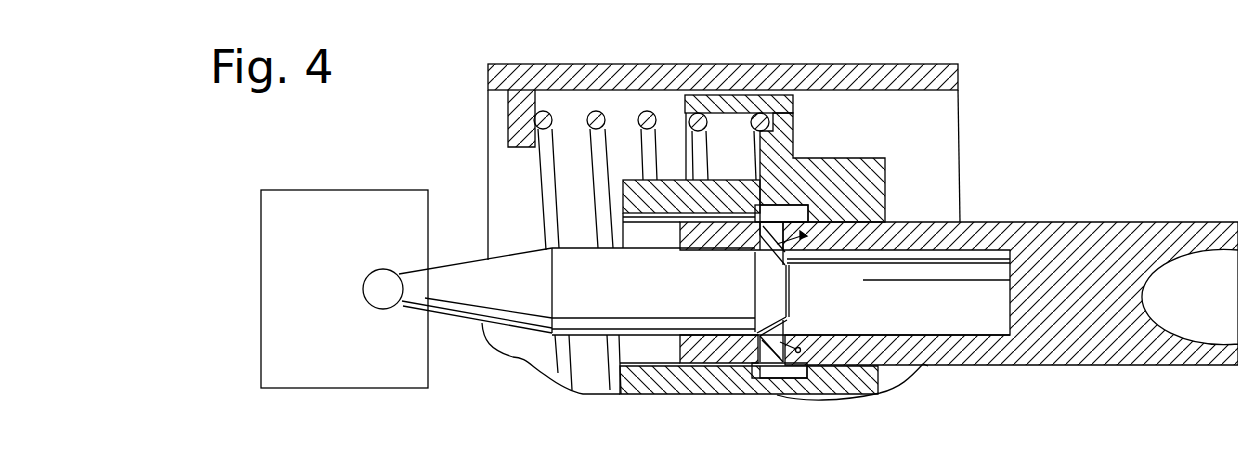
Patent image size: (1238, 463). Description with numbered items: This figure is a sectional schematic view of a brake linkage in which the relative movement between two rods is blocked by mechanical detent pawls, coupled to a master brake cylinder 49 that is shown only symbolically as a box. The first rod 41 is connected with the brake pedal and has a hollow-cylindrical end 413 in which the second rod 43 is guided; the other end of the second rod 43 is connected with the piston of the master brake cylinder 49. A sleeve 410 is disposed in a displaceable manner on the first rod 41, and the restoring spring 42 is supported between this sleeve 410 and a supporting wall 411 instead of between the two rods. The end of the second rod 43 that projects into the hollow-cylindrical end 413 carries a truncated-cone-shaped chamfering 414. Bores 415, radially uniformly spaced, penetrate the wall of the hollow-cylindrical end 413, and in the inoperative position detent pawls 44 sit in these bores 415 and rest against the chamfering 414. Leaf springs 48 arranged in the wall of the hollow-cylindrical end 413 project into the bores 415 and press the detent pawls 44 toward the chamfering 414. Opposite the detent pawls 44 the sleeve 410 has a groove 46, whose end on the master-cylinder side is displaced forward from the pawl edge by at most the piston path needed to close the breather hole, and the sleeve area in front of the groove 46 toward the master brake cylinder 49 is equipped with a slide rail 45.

The first rod 41 is at (1063, 245).
The restoring spring 42 is at (648, 150).
The second rod 43 is at (662, 296).
The detent pawls 44 is at (770, 232).
The slide rail 45 is at (722, 213).
The groove 46 is at (797, 212).
The leaf springs 48 is at (806, 250).
The master brake cylinder 49 is at (328, 212).
The sleeve 410 is at (887, 185).
The supporting wall 411 is at (698, 78).
The hollow-cylindrical end 413 is at (952, 318).
The truncated-cone-shaped chamfering 414 is at (757, 310).
The bores 415 is at (778, 352).